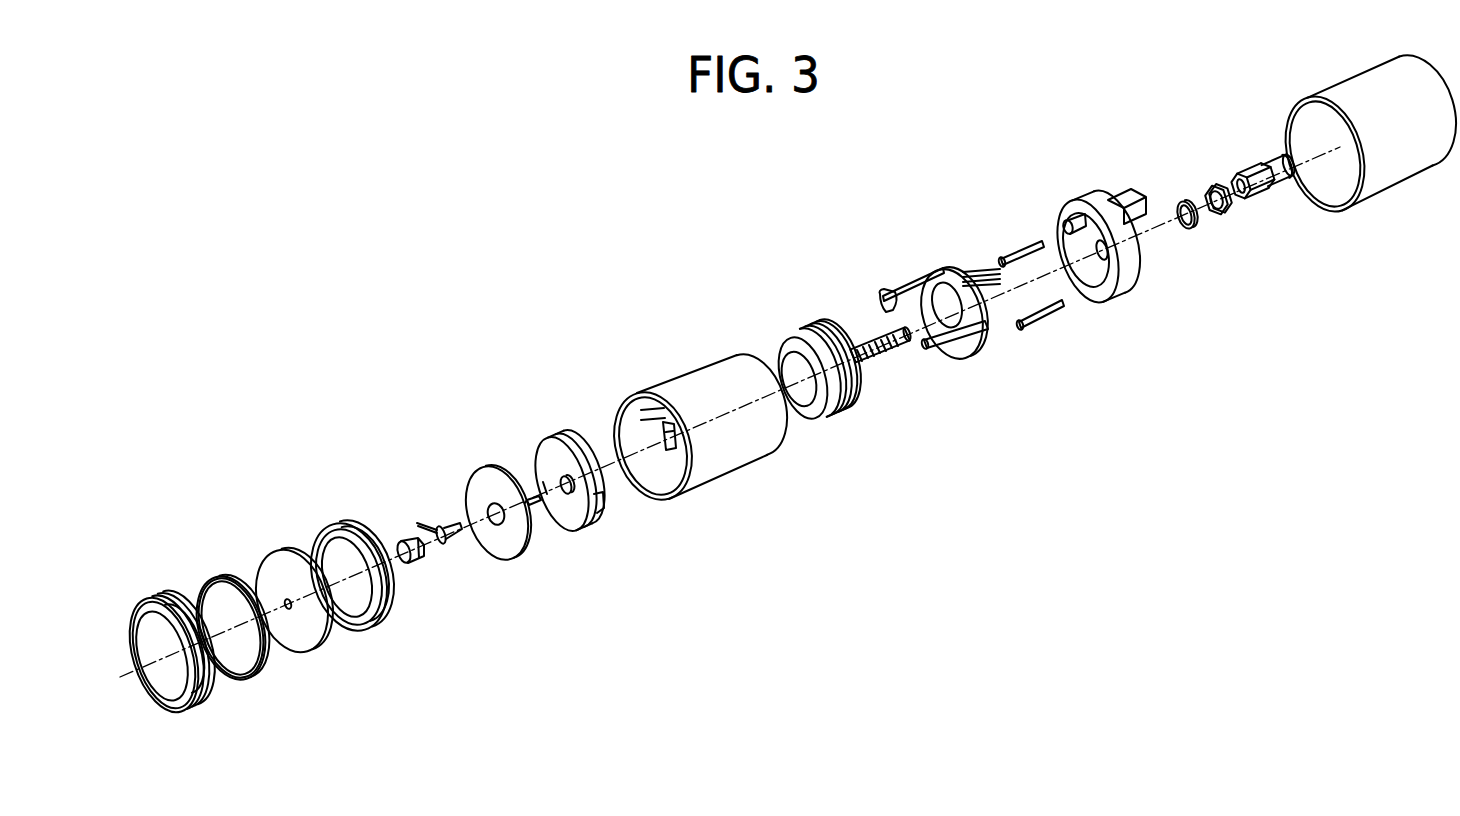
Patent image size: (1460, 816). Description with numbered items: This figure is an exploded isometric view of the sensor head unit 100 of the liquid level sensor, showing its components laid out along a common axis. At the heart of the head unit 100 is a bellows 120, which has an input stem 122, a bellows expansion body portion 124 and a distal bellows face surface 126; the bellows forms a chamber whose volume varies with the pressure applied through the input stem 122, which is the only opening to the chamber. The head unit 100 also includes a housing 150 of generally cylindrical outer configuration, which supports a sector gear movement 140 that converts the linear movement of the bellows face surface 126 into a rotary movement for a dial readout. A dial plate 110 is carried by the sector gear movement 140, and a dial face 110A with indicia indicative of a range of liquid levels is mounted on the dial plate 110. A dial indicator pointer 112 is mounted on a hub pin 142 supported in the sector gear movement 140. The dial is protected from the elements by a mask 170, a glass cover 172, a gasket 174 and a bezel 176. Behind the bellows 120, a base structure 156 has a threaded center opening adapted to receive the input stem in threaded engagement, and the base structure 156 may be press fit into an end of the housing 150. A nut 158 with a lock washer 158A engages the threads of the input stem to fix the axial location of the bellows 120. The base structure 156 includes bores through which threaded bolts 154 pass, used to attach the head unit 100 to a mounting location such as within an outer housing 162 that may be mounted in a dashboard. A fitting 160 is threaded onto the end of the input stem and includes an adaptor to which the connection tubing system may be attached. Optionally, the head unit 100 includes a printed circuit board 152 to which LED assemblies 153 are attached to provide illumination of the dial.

The head unit 100 is at (950, 453).
The dial plate 110 is at (582, 520).
The dial face 110A is at (511, 550).
The dial indicator pointer 112 is at (425, 520).
The bellows 120 is at (830, 416).
The input stem 122 is at (878, 356).
The bellows expansion body portion 124 is at (797, 330).
The distal bellows face surface 126 is at (784, 370).
The sector gear movement 140 is at (574, 434).
The hub pin 142 is at (531, 494).
The housing 150 is at (682, 380).
The printed circuit board 152 is at (970, 354).
The LED assemblies 153 is at (876, 306).
The threaded bolts 154 is at (1040, 312).
The base structure 156 is at (1130, 290).
The nut 158 is at (1208, 185).
The lock washer 158A is at (1197, 227).
The fitting 160 is at (1265, 195).
The outer housing 162 is at (1355, 80).
The mask 170 is at (363, 632).
The glass cover 172 is at (308, 652).
The gasket 174 is at (246, 682).
The bezel 176 is at (152, 695).